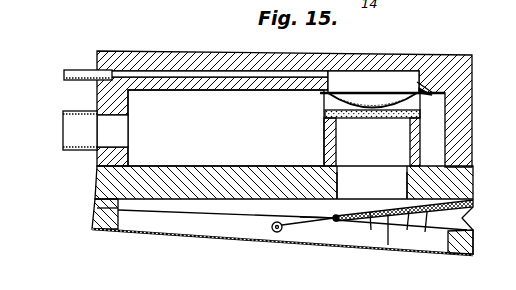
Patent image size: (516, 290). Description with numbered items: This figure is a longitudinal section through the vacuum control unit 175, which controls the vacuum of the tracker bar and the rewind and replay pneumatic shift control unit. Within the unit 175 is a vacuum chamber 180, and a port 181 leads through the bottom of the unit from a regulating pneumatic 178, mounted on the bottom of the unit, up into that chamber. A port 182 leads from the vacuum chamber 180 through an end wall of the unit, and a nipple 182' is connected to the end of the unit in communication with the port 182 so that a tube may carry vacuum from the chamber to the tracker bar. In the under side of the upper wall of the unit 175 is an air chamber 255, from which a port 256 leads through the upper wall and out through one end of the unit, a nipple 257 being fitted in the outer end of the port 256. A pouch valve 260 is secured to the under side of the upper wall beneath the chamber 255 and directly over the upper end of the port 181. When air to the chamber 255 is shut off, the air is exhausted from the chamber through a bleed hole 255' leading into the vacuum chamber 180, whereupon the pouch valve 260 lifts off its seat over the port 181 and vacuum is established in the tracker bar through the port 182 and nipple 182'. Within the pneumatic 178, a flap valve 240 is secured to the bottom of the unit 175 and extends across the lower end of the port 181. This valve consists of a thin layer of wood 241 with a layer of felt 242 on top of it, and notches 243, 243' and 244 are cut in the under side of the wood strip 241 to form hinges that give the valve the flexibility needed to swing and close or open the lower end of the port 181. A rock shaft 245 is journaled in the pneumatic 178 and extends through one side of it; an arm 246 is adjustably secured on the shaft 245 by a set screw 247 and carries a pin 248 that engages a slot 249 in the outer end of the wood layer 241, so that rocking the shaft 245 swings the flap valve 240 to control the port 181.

The vacuum control unit 175 is at (302, 109).
The port 256 is at (214, 77).
The nipple 257 is at (74, 70).
The air chamber 255 is at (373, 82).
The bleed hole 255' is at (443, 60).
The pouch valve 260 is at (382, 101).
The port 181 is at (372, 129).
The vacuum chamber 180 is at (226, 128).
The port 182 is at (132, 131).
The nipple 182' is at (64, 147).
The regulating pneumatic 178 is at (284, 210).
The layer of felt 242 is at (349, 207).
The set screw 247 is at (262, 227).
The flap valve 240 is at (378, 208).
The pin 248 is at (334, 217).
The rock shaft 245 is at (279, 233).
The arm 246 is at (310, 223).
The slot 249 is at (341, 224).
The notch 244 is at (370, 229).
The notch 243 is at (405, 229).
The layer of wood 241 is at (447, 233).
The notch 243' is at (391, 244).